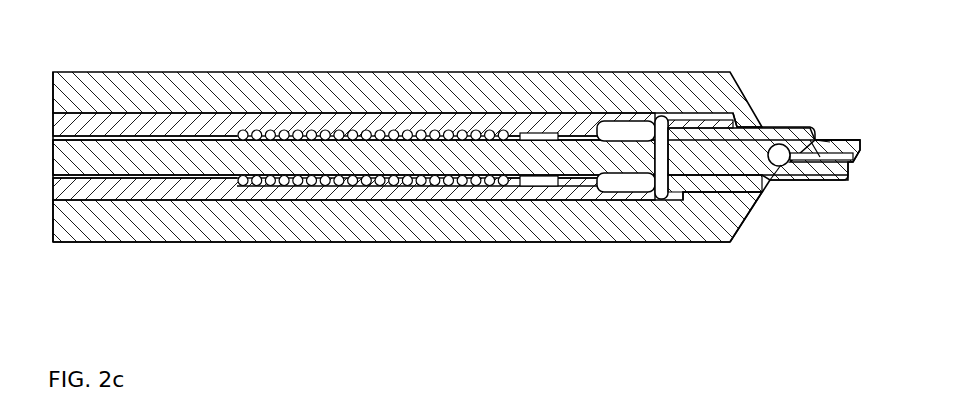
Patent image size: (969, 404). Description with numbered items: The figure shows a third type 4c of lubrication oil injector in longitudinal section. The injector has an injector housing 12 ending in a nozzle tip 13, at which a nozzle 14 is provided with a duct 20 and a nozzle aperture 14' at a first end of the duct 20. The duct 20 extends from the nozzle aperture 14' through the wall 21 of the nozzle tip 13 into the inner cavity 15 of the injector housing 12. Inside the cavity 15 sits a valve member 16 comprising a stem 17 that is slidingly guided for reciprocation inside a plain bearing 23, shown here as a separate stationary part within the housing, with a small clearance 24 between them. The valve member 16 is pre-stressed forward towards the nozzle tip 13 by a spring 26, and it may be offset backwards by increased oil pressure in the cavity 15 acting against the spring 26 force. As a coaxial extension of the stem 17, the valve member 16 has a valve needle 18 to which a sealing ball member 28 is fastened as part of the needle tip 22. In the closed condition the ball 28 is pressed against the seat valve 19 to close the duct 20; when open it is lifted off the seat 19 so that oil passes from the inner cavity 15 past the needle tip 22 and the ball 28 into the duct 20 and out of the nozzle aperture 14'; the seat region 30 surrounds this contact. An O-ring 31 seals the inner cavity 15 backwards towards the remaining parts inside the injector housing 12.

The injector housing 12 is at (292, 98).
The nozzle tip 13 is at (838, 133).
The nozzle 14 is at (844, 121).
The nozzle aperture 14' is at (825, 222).
The inner cavity 15 is at (693, 198).
The valve member 16 is at (343, 157).
The stem 17 is at (118, 157).
The valve needle 18 is at (710, 155).
The seat valve 19 is at (788, 167).
The duct 20 is at (820, 157).
The wall 21 is at (830, 142).
The needle tip 22 is at (768, 160).
The plain bearing 23 is at (222, 127).
The gap 24 is at (157, 130).
The spring 26 is at (393, 135).
The sealing ball member 28 is at (781, 165).
The seat lip 30 is at (783, 173).
The O-ring 31 is at (662, 147).
The third type of lubrication oil injector 4c is at (112, 266).